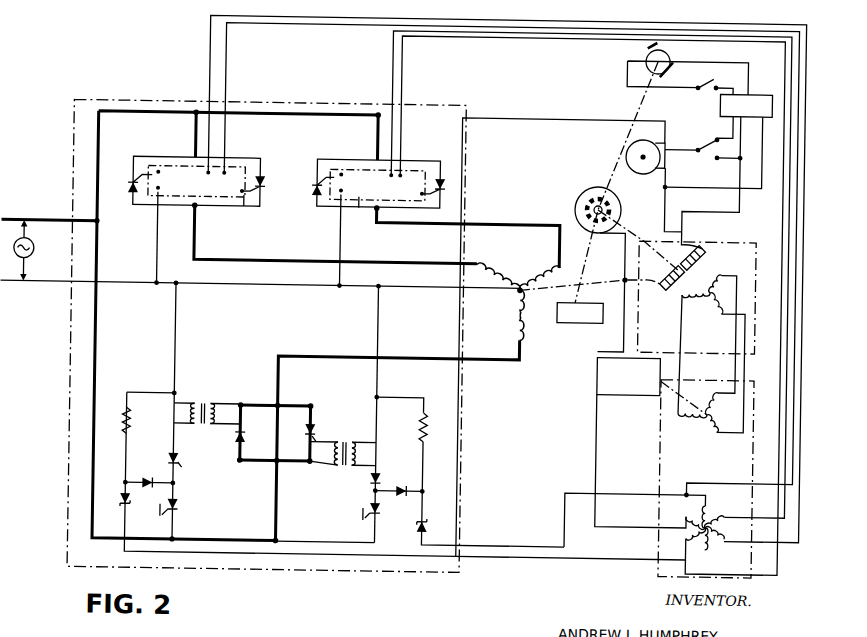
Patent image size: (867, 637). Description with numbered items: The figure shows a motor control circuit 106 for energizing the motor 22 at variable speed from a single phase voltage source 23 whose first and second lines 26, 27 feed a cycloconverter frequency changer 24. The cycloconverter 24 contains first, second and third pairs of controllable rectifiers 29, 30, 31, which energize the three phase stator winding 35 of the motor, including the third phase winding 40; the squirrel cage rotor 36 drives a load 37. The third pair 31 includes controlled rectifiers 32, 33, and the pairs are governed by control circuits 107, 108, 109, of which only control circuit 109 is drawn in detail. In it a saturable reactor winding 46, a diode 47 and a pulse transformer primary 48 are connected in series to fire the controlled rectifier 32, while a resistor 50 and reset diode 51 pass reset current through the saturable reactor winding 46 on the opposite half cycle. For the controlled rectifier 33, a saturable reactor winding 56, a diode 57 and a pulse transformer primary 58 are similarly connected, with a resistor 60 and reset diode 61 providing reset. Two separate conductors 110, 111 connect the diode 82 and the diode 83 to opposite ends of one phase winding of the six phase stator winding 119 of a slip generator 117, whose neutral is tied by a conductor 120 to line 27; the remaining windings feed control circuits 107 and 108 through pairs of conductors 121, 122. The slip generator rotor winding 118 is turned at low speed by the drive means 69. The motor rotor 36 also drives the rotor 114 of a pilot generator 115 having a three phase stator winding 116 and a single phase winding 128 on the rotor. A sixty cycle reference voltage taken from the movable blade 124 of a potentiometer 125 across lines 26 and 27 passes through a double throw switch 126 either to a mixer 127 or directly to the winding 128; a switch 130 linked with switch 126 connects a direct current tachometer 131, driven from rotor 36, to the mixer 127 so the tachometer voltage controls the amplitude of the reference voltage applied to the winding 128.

The motor 22 is at (502, 259).
The single phase voltage source 23 is at (33, 255).
The cycloconverter frequency changer 24 is at (128, 105).
The first line 26 is at (20, 226).
The second line 27 is at (22, 289).
The first pair of controllable rectifiers 29 is at (262, 200).
The second pair of controllable rectifiers 30 is at (412, 162).
The third pair of controllable rectifiers 31 is at (313, 407).
The controlled rectifier 32 is at (240, 447).
The controlled rectifier 33 is at (314, 434).
The three phase stator winding 35 is at (519, 302).
The squirrel cage rotor 36 is at (574, 210).
The load 37 is at (583, 322).
The third phase winding 40 is at (519, 332).
The saturable reactor winding 46 is at (179, 517).
The diode 47 is at (179, 462).
The pulse transformer primary 48 is at (193, 408).
The resistor 50 is at (131, 419).
The reset diode 51 is at (150, 485).
The saturable reactor winding 56 is at (374, 515).
The diode 57 is at (374, 481).
The pulse transformer primary 58 is at (355, 441).
The resistor 60 is at (425, 420).
The reset diode 61 is at (404, 487).
The drive means 69 is at (633, 393).
The diode 82 is at (124, 507).
The diode 83 is at (427, 530).
The motor control circuit 106 is at (521, 167).
The control circuit 107 is at (242, 211).
The control circuit 108 is at (357, 211).
The control circuit 109 is at (289, 511).
The conductor 110 is at (498, 558).
The conductor 111 is at (504, 544).
The rotor 114 is at (716, 240).
The pilot generator 115 is at (733, 238).
The three phase stator winding 116 is at (715, 305).
The slip generator 117 is at (665, 455).
The rotor winding 118 is at (716, 426).
The six phase stator winding 119 is at (690, 521).
The conductor 120 is at (568, 470).
The pair of conductors 121 is at (308, 30).
The pair of conductors 122 is at (504, 34).
The movable blade 124 is at (630, 170).
The potentiometer 125 is at (654, 140).
The double throw switch 126 is at (703, 149).
The mixer 127 is at (759, 90).
The single phase winding 128 is at (703, 266).
The switch 130 is at (711, 82).
The direct current tachometer 131 is at (642, 62).